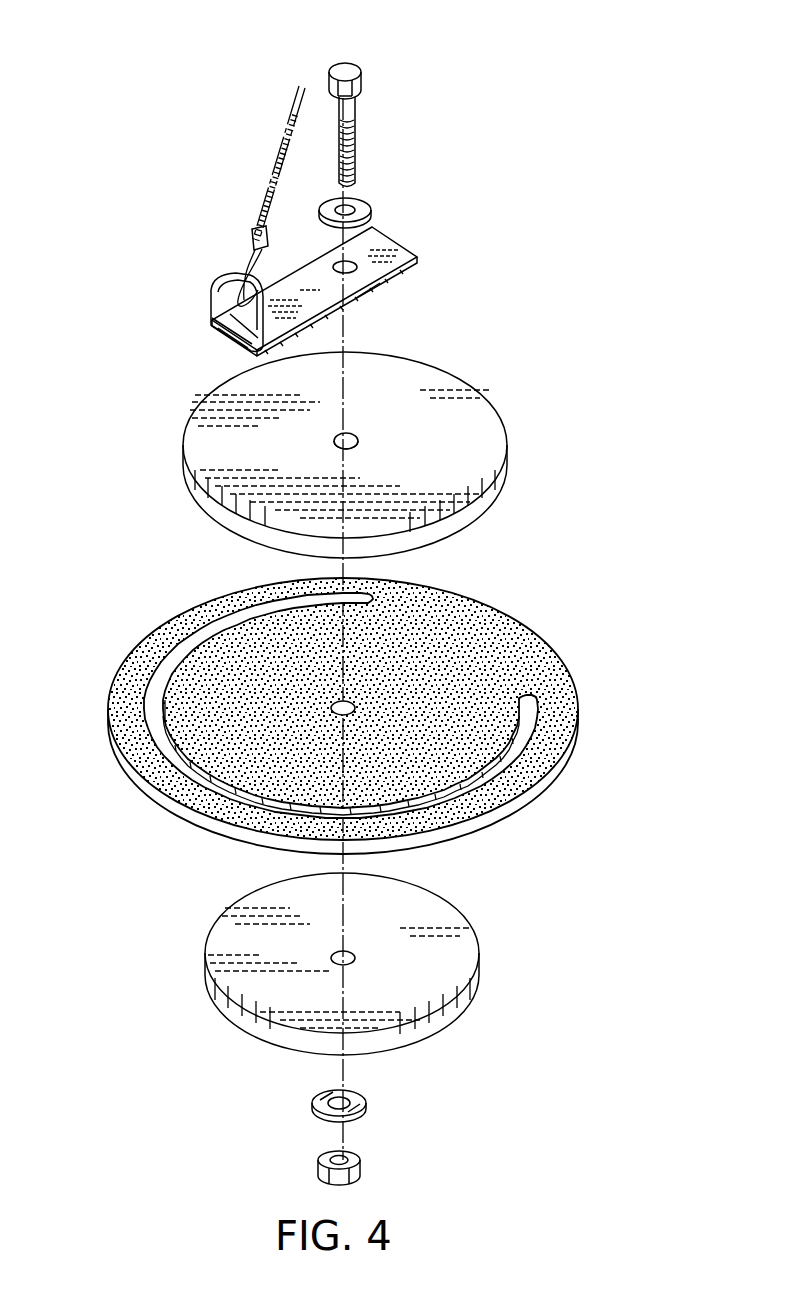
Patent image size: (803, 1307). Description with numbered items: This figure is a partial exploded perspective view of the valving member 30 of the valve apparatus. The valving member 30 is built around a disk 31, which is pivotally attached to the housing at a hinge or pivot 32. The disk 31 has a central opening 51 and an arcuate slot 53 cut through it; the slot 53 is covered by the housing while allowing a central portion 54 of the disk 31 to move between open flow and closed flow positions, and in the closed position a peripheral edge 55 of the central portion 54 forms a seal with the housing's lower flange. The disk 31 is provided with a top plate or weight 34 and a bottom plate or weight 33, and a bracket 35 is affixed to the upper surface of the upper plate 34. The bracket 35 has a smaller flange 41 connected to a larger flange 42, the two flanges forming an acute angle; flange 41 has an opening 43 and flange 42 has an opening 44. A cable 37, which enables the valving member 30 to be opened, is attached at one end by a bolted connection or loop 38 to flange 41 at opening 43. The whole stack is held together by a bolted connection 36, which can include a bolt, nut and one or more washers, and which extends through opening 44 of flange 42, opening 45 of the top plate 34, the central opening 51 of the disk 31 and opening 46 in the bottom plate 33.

The valving member 30 is at (630, 328).
The disk 31 is at (580, 746).
The hinge or pivot 32 is at (505, 616).
The bottom plate or weight 33 is at (438, 916).
The top plate or weight 34 is at (488, 445).
The bracket 35 is at (392, 236).
The bolted connection 36 is at (368, 200).
The cable 37 is at (266, 172).
The bolted connection or loop 38 is at (248, 258).
The flange 41 is at (236, 307).
The flange 42 is at (368, 275).
The opening 43 is at (248, 340).
The opening 44 is at (360, 282).
The opening 45 is at (356, 436).
The opening 46 is at (337, 963).
The central opening 51 is at (352, 702).
The arcuate slot 53 is at (165, 662).
The central portion 54 is at (522, 735).
The peripheral edge 55 is at (168, 735).